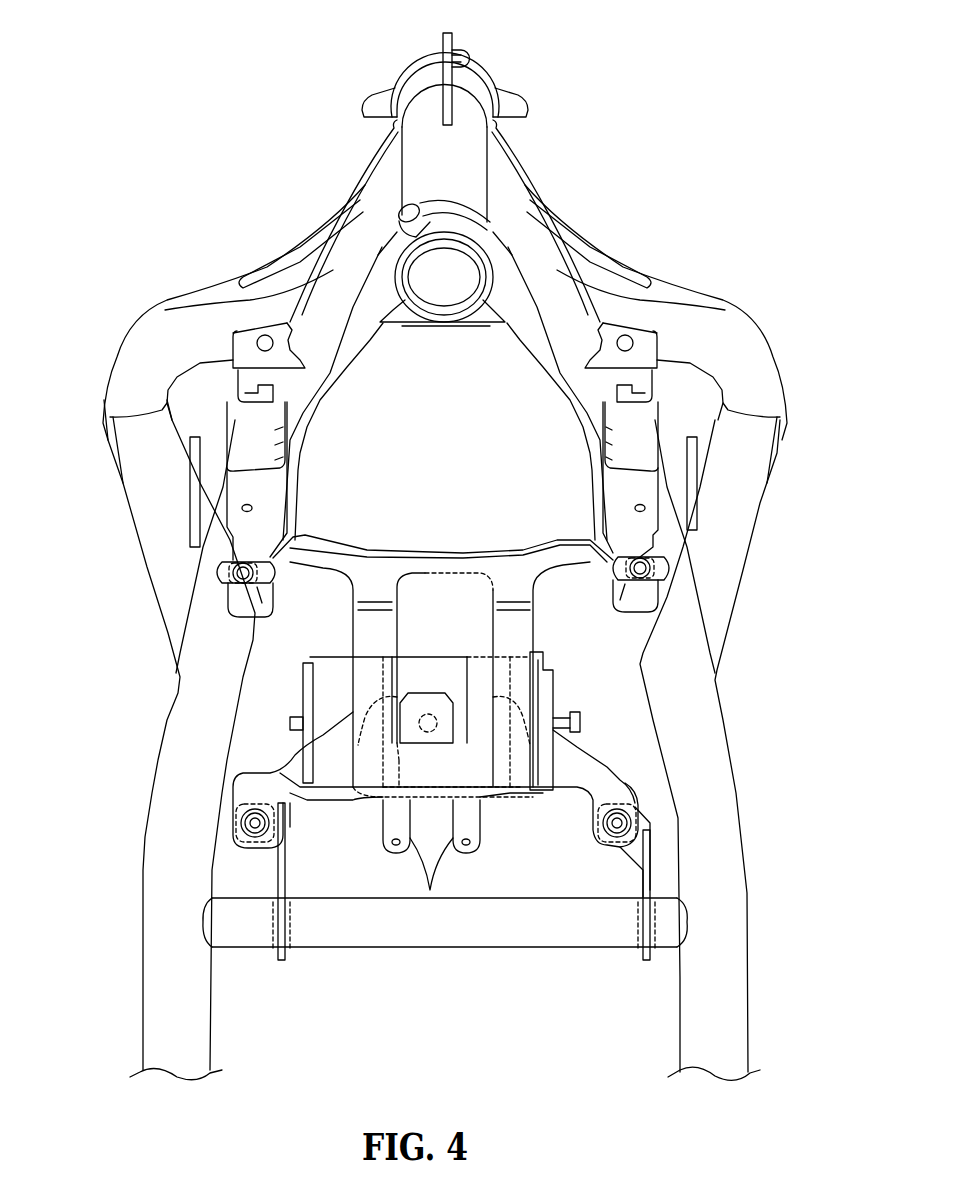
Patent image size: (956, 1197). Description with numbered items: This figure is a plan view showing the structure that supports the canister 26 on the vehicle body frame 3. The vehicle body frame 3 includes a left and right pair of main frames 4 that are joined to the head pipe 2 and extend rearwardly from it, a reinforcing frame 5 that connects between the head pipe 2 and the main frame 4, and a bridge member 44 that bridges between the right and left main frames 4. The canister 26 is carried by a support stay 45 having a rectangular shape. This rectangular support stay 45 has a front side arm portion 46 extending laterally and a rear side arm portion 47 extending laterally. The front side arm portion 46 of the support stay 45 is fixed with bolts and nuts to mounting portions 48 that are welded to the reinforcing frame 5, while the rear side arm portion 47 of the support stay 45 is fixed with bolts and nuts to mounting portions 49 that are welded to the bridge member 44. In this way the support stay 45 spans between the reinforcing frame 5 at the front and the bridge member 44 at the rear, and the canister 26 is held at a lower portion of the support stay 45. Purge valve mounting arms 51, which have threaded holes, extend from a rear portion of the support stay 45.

The head pipe 2 is at (470, 163).
The vehicle body frame 3 is at (266, 160).
The main frame 4 is at (180, 755).
The reinforcing frame 5 is at (350, 307).
The canister 26 is at (327, 690).
The bridge member 44 is at (535, 925).
The support stay 45 is at (517, 633).
The front side arm portion 46 is at (233, 572).
The rear side arm portion 47 is at (240, 797).
The mounting portion 48 is at (233, 495).
The mounting portion 49 is at (283, 868).
The purge valve mounting arm 51 is at (430, 890).